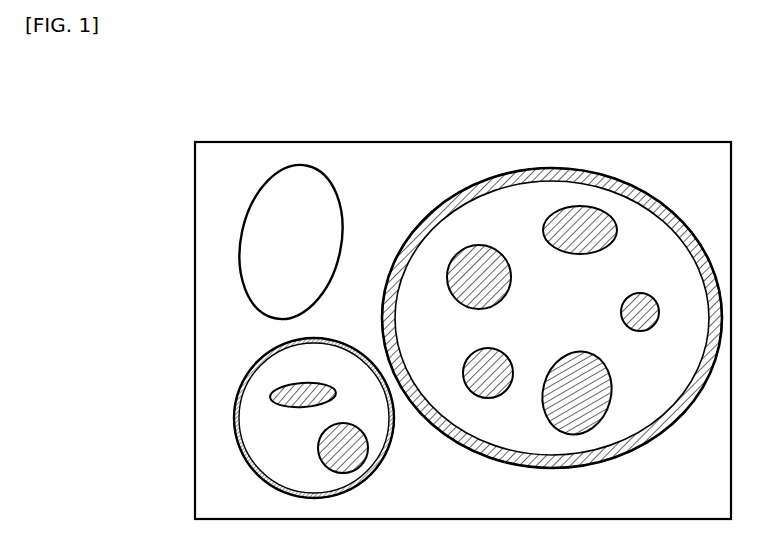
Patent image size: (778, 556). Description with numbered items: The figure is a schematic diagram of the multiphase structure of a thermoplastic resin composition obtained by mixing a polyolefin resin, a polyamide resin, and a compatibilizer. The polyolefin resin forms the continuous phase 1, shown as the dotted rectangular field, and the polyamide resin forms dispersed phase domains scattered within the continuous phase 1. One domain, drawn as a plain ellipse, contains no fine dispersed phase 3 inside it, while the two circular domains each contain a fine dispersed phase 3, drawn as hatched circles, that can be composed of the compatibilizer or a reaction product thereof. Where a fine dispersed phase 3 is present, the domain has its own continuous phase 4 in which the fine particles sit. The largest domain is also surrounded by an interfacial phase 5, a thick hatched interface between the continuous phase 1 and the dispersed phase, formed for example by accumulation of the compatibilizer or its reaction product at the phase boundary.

The continuous phase 1 is at (392, 158).
The fine dispersed phase 3 is at (590, 213).
The continuous phase in dispersed phase 4 is at (505, 198).
The interfacial phase 5 is at (678, 417).